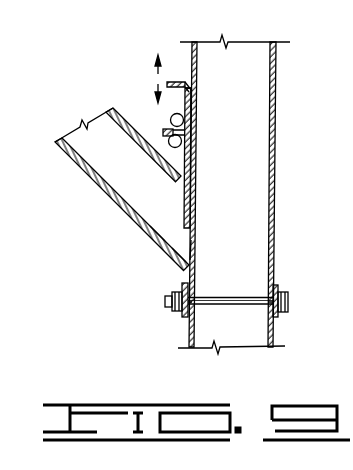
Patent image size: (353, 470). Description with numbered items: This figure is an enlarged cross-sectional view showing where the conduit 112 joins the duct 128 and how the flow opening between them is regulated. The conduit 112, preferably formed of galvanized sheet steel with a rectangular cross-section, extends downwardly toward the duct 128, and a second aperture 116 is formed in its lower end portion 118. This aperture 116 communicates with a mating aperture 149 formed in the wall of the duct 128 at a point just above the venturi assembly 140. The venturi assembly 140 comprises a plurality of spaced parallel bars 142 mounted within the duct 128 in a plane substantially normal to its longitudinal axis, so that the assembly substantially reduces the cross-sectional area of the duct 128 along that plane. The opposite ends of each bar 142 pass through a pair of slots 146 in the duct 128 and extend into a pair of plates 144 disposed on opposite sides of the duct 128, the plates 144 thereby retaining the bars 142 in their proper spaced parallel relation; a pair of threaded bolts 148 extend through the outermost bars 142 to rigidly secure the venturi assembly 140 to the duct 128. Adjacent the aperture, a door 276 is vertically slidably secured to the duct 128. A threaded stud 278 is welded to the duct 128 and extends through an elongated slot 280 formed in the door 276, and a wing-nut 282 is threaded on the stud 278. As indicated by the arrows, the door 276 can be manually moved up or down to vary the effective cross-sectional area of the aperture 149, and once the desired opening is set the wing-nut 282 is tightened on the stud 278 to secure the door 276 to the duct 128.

The conduit 112 is at (79, 157).
The second aperture 116 is at (186, 236).
The lower end portion 118 is at (178, 257).
The duct 128 is at (278, 148).
The venturi assembly 140 is at (252, 298).
The spaced parallel bars 142 is at (242, 298).
The plates 144 is at (182, 314).
The slots 146 is at (192, 303).
The threaded bolts 148 is at (181, 287).
The mating aperture 149 is at (193, 253).
The door 276 is at (185, 200).
The threaded stud 278 is at (170, 144).
The elongated slot 280 is at (193, 107).
The wing-nut 282 is at (176, 117).